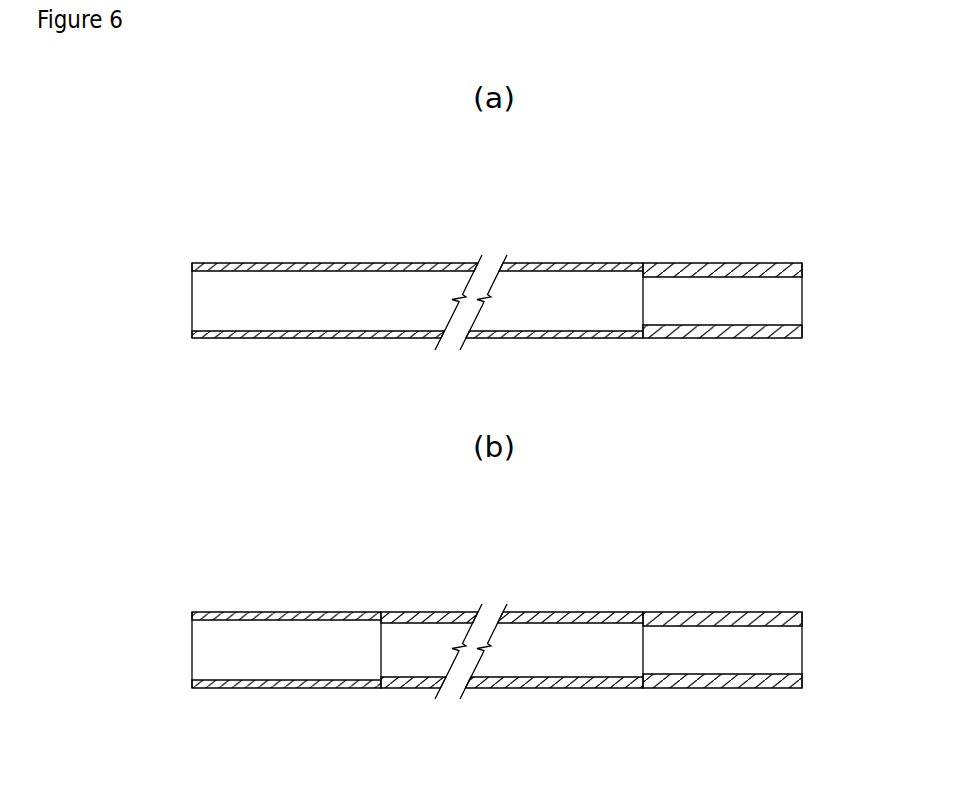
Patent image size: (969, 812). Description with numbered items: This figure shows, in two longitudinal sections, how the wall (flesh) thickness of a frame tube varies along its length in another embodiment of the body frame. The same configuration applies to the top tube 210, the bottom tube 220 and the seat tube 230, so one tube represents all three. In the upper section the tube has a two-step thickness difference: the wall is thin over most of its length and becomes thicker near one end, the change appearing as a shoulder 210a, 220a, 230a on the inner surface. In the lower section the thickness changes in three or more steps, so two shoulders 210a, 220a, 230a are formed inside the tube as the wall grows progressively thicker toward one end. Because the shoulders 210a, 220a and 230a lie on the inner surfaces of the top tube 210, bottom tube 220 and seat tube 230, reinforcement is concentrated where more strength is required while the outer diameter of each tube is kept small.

The top tube 210 is at (497, 475).
The bottom tube 220 is at (497, 475).
The seat tube 230 is at (497, 475).
The shoulder 210a is at (569, 475).
The shoulder 220a is at (569, 475).
The shoulder 230a is at (643, 275).